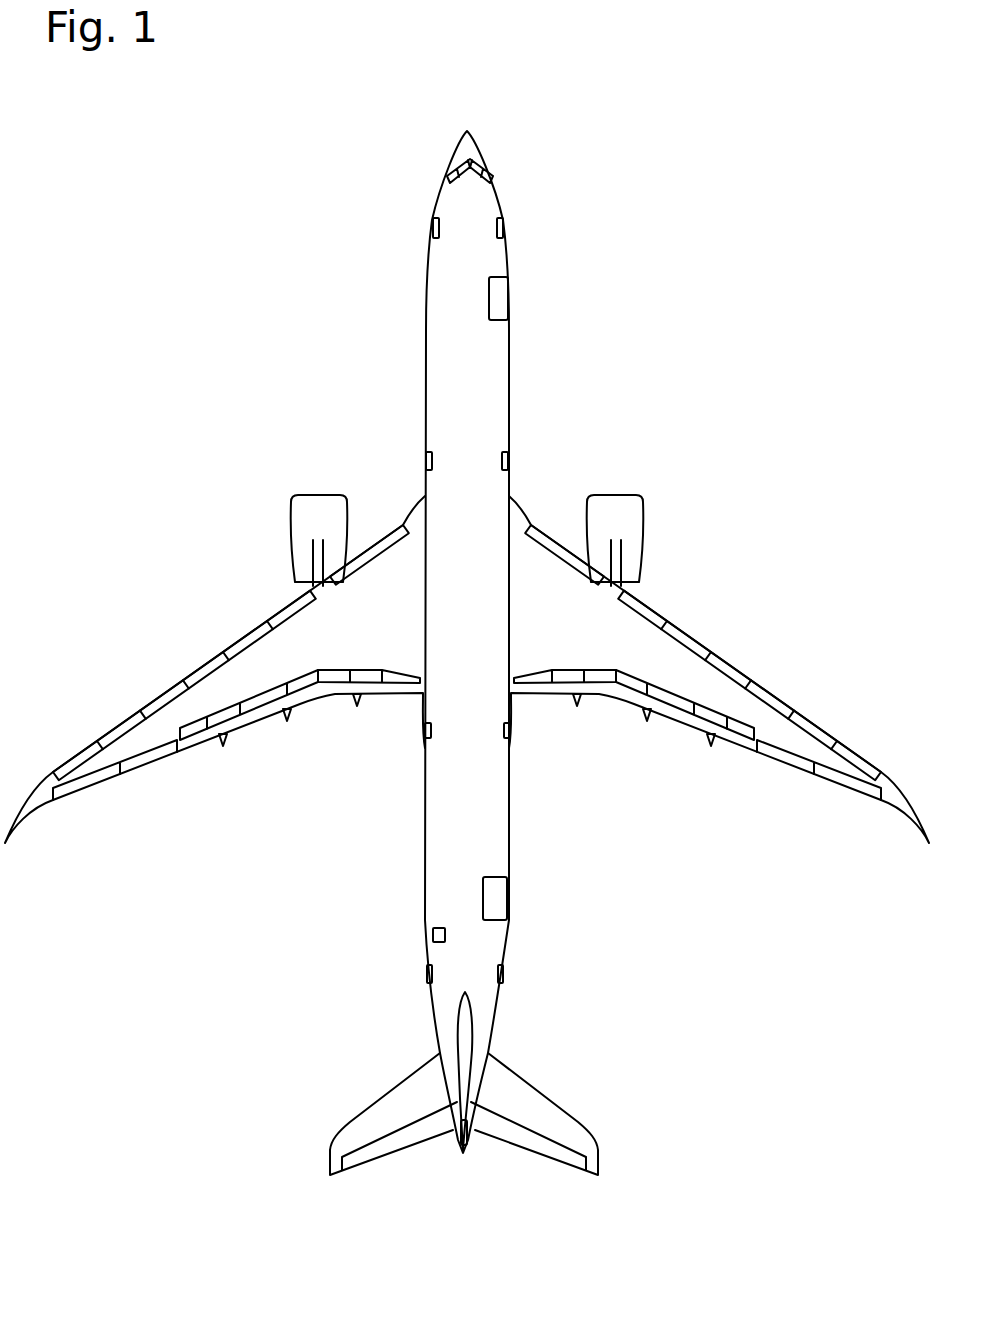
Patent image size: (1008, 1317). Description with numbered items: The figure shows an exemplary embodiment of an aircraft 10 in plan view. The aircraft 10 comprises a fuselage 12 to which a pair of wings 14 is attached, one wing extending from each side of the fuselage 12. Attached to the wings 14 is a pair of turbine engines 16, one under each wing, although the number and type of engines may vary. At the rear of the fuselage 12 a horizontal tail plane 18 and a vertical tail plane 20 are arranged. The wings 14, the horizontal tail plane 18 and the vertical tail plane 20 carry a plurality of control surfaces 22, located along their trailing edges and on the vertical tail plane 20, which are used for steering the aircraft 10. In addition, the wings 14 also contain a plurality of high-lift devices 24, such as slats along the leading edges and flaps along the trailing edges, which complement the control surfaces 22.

The aircraft 10 is at (287, 332).
The fuselage 12 is at (500, 377).
The wings 14 is at (124, 636).
The turbine engines 16 is at (261, 525).
The horizontal tail plane 18 is at (527, 1090).
The vertical tail plane 20 is at (465, 1030).
The control surfaces 22 is at (63, 793).
The high-lift devices 24 is at (373, 540).